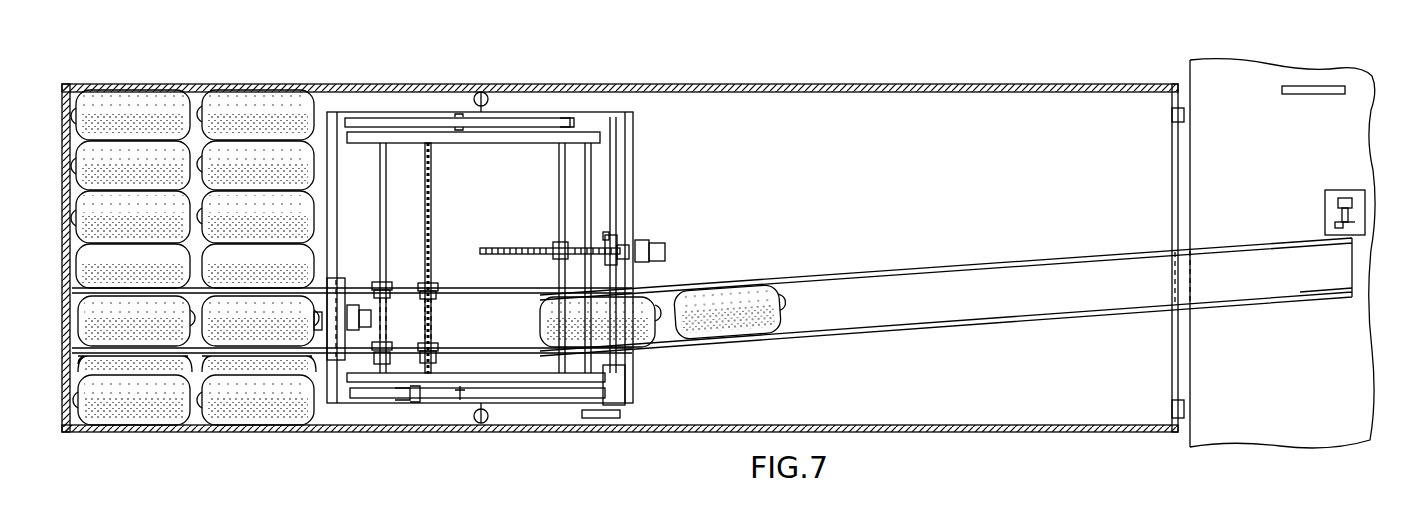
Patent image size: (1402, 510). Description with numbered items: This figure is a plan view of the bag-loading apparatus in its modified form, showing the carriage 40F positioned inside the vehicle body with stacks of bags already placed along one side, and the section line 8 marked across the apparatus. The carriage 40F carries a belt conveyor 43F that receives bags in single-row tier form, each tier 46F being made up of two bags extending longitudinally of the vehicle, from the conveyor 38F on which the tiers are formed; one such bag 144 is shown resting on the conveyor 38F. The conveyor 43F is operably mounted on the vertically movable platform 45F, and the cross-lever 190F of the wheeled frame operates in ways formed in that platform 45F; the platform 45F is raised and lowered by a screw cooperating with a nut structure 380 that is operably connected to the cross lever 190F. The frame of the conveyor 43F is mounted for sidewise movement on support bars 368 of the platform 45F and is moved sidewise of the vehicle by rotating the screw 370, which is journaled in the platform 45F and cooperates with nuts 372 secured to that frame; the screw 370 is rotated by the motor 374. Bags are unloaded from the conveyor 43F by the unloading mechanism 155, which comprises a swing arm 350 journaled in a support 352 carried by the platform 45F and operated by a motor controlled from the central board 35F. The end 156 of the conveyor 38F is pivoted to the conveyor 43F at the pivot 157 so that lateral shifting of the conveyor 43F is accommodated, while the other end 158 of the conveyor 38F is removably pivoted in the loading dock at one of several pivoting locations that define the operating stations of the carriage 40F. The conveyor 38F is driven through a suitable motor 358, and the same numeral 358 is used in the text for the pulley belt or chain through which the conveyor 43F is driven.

The section line 8- 8 is at (50, 243).
The central board 35F is at (1302, 86).
The conveyor 38F is at (940, 266).
The carriage 40F is at (546, 104).
The conveyor 43F is at (521, 347).
The platform 45F is at (506, 283).
The tier 46F is at (781, 282).
The bag 144 is at (740, 335).
The unloading mechanism 155 is at (207, 352).
The end of conveyor 38F 156 is at (571, 357).
The pivot 157 is at (612, 325).
The other end of conveyor 38F 158 is at (1335, 298).
The cross-lever 190F is at (556, 173).
The swing arm 350 is at (266, 288).
The support 352 is at (330, 367).
The motor 358 is at (1330, 200).
The support bars 368 is at (383, 212).
The screw 370 is at (431, 232).
The nuts 372 is at (434, 290).
The motor 374 is at (405, 400).
The nut structure 380 is at (566, 244).